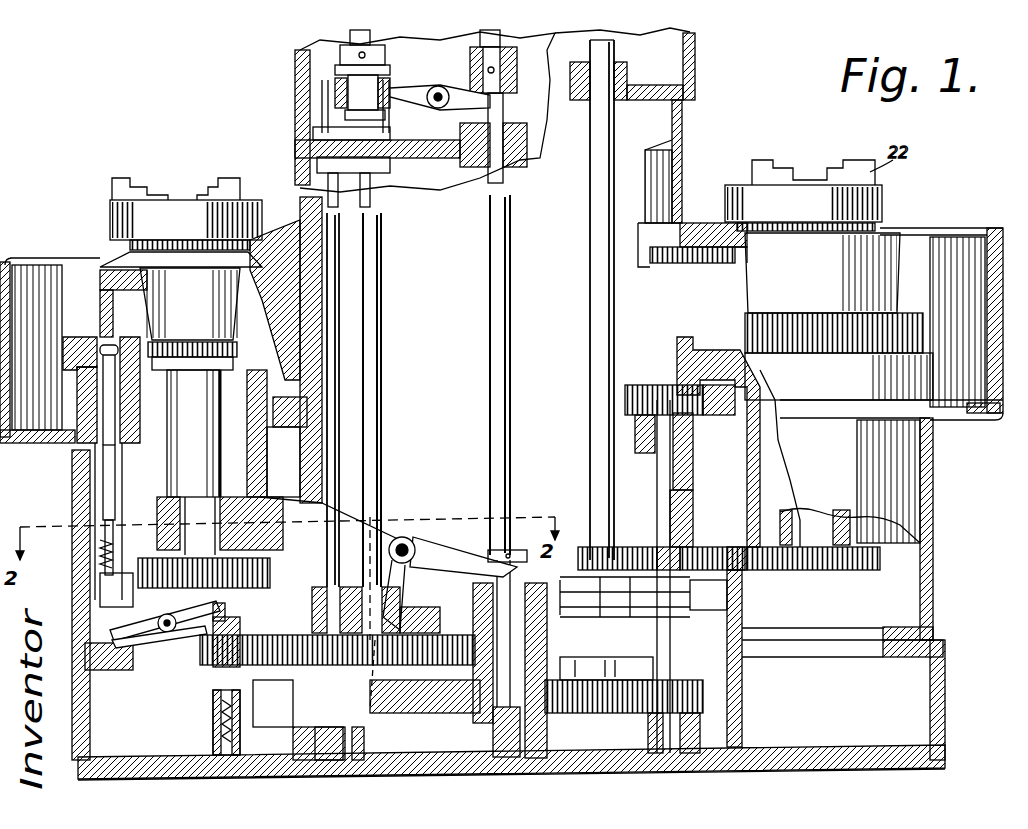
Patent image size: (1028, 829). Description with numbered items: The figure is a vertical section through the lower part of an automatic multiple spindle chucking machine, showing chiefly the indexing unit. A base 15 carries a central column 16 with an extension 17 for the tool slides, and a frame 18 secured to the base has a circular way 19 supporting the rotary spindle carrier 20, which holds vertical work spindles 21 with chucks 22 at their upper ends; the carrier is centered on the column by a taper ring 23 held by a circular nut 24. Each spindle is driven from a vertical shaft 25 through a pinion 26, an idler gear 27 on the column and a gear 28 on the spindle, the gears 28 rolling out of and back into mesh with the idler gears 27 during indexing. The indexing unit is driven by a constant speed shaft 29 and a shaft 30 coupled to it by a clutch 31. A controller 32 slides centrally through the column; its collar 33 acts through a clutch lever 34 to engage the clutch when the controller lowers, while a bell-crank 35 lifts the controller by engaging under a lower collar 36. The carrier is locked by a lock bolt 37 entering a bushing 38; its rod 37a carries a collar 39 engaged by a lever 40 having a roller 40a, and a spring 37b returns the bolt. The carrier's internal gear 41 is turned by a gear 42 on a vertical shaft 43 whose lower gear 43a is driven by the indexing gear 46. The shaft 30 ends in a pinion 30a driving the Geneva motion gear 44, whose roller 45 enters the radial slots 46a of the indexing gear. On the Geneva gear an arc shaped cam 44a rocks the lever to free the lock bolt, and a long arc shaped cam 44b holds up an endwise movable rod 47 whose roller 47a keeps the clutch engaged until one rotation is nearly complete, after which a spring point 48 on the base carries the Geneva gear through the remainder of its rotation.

The base 15 is at (948, 672).
The central column 16 is at (683, 150).
The extension 17 is at (295, 65).
The frame 18 is at (935, 505).
The circular way 19 is at (78, 392).
The rotary spindle carrier 20 is at (70, 340).
The rotary work spindle 21 is at (222, 388).
The chuck 22 is at (130, 178).
The taper ring 23 is at (283, 322).
The circular nut 24 is at (300, 235).
The vertical shaft 25 is at (592, 190).
The pinion 26 is at (595, 547).
The idler gear 27 is at (742, 572).
The gear 28 is at (272, 570).
The constant speed shaft 29 is at (350, 40).
The shaft 30 is at (375, 285).
The pinion 30a is at (378, 717).
The clutch 31 is at (385, 108).
The controller 32 is at (503, 325).
The collar 33 is at (517, 70).
The clutch lever 34 is at (410, 90).
The bell-crank 35 is at (458, 562).
The lower collar 36 is at (520, 550).
The lock bolt 37 is at (118, 450).
The lock bolt rod 37a is at (114, 487).
The spring 37b is at (114, 527).
The bushing 38 is at (112, 345).
The collar 39 is at (108, 672).
The lever 40 is at (140, 622).
The roller 40a is at (225, 612).
The internal gear 41 is at (282, 428).
The gear 42 is at (648, 385).
The vertical shaft 43 is at (662, 492).
The gear 43a is at (690, 690).
The Geneva motion gear 44 is at (337, 669).
The arc shaped cam 44a is at (159, 637).
The long arc shaped cam 44b is at (420, 610).
The roller 45 is at (425, 709).
The indexing gear 46 is at (585, 712).
The radial slot 46a is at (575, 667).
The endwise movable rod 47 is at (337, 275).
The roller 47a is at (335, 90).
The spring point 48 is at (240, 690).